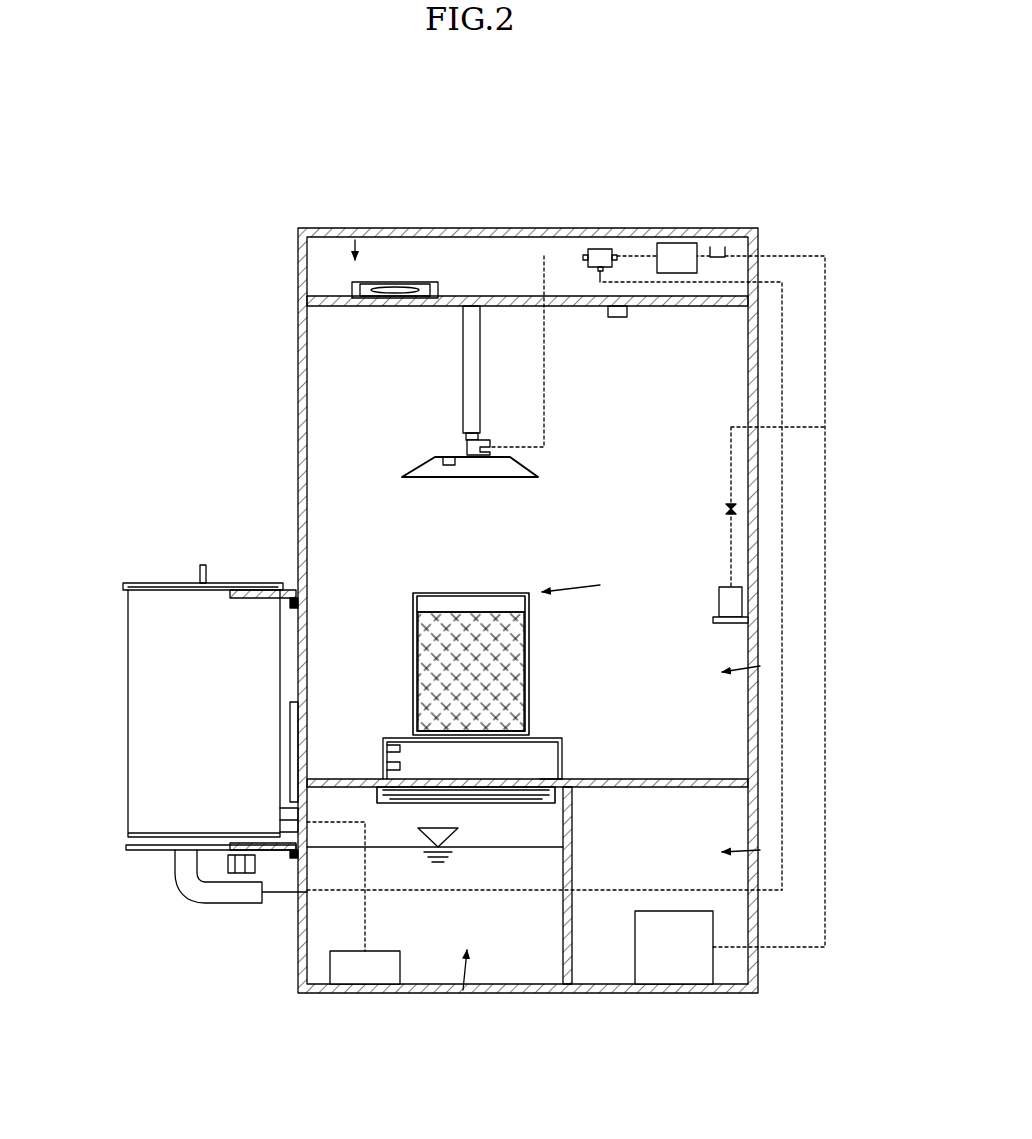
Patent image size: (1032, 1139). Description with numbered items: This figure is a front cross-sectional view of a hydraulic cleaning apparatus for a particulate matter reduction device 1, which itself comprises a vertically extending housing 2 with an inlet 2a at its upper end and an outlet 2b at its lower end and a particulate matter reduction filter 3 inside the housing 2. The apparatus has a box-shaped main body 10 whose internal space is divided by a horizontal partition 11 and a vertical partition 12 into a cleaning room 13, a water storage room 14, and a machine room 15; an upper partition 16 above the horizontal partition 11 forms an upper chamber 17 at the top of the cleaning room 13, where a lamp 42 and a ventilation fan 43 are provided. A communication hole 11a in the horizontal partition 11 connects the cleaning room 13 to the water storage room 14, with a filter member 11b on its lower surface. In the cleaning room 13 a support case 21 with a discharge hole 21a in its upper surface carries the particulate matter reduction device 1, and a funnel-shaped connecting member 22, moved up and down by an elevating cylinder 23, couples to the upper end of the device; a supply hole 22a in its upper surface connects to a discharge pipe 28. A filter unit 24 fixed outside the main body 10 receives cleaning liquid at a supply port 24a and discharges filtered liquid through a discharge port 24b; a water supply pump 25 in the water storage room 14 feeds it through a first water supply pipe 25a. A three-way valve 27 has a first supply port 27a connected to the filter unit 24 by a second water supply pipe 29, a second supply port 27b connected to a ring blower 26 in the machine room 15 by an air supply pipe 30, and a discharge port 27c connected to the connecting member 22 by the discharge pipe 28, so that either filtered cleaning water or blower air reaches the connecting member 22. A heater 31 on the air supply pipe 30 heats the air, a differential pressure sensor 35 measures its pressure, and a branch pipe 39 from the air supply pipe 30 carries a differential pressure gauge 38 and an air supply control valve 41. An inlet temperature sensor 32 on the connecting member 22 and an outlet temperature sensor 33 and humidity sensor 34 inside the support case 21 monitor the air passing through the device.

The particulate matter reduction device 1 is at (600, 585).
The housing 2 is at (474, 634).
The inlet 2a is at (418, 596).
The outlet 2b is at (420, 730).
The particulate matter reduction filter 3 is at (500, 618).
The main body 10 is at (298, 408).
The horizontal partition 11 is at (752, 778).
The communication hole 11a is at (560, 777).
The filter member 11b is at (563, 792).
The vertical partition 12 is at (563, 960).
The cleaning room 13 is at (760, 666).
The water storage room 14 is at (463, 990).
The machine room 15 is at (760, 850).
The upper partition 16 is at (320, 296).
The upper chamber 17 is at (355, 230).
The support case 21 is at (560, 742).
The discharge hole 21a is at (495, 803).
The connecting member 22 is at (436, 457).
The supply hole 22a is at (455, 465).
The elevating cylinder 23 is at (463, 354).
The filter unit 24 is at (128, 745).
The supply port 24a is at (280, 808).
The discharge port 24b is at (222, 905).
The water supply pump 25 is at (400, 975).
The first water supply pipe 25a is at (365, 920).
The ring blower 26 is at (640, 955).
The three-way valve 27 is at (600, 249).
The first supply port 27a is at (600, 272).
The second supply port 27b is at (617, 256).
The discharge port 27c is at (583, 257).
The discharge pipe 28 is at (547, 427).
The second water supply pipe 29 is at (782, 368).
The air supply pipe 30 is at (825, 306).
The heater 31 is at (687, 243).
The inlet temperature sensor 32 is at (436, 457).
The outlet temperature sensor 33 is at (400, 750).
The humidity sensor 34 is at (395, 770).
The differential pressure sensor 35 is at (720, 247).
The differential pressure gauge 38 is at (719, 600).
The branch pipe 39 is at (748, 455).
The air supply control valve 41 is at (726, 509).
The lamp 42 is at (617, 318).
The ventilation fan 43 is at (410, 285).